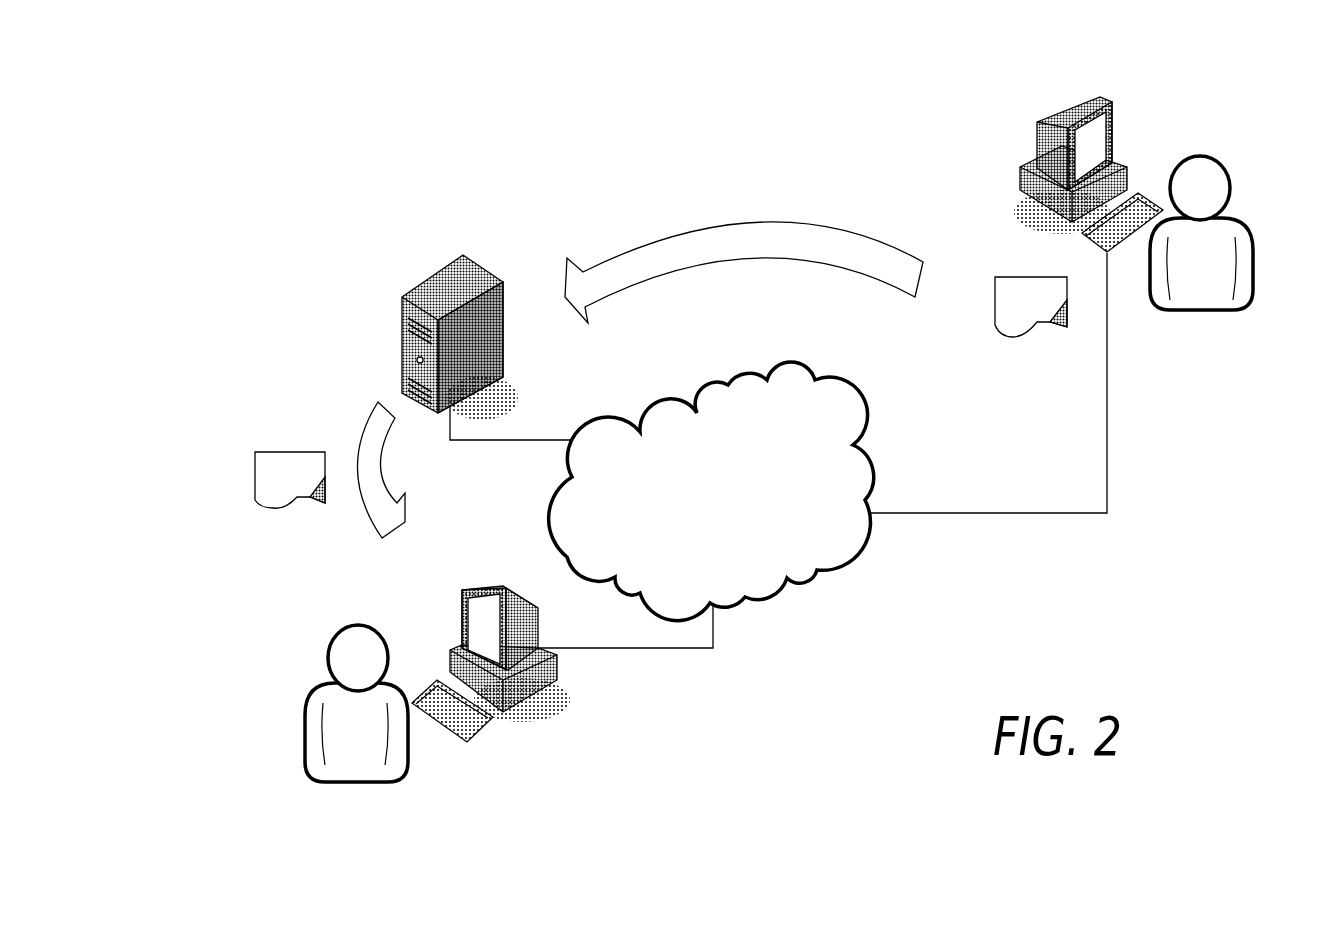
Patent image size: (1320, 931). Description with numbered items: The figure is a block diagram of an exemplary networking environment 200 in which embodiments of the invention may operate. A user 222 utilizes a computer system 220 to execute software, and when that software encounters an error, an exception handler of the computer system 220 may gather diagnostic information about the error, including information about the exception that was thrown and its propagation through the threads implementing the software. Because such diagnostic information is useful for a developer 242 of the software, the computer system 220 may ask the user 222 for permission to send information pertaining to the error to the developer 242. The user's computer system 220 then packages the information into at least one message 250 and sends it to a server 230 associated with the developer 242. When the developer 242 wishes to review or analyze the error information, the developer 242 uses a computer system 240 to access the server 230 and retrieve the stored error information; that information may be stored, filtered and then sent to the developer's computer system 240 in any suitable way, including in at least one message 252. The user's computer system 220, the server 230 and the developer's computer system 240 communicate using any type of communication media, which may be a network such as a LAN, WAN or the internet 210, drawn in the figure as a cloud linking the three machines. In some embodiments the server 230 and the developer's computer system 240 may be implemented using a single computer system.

The networking environment 200 is at (333, 127).
The internet 210 is at (730, 378).
The computer system 220 is at (1117, 112).
The user 222 is at (1233, 180).
The server 230 is at (437, 272).
The computer system 240 is at (475, 586).
The developer 242 is at (350, 628).
The message 250 is at (1005, 277).
The message 252 is at (257, 452).